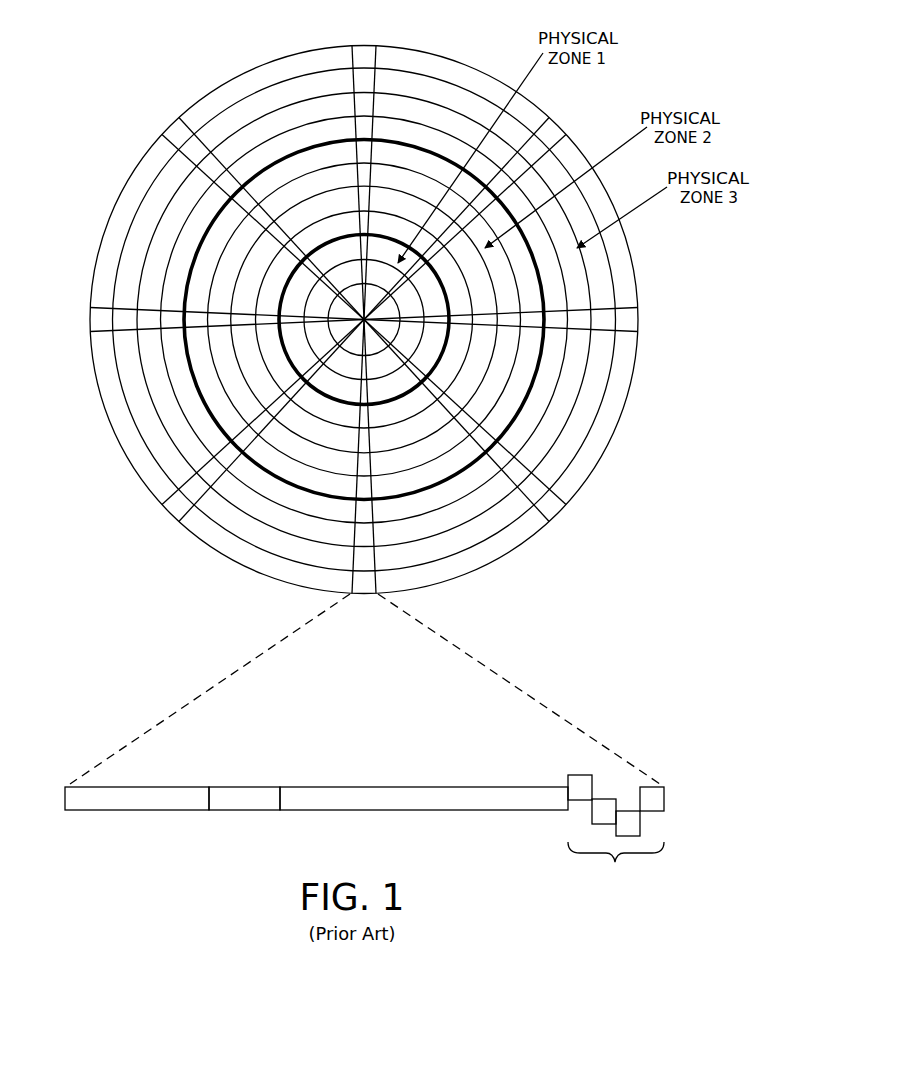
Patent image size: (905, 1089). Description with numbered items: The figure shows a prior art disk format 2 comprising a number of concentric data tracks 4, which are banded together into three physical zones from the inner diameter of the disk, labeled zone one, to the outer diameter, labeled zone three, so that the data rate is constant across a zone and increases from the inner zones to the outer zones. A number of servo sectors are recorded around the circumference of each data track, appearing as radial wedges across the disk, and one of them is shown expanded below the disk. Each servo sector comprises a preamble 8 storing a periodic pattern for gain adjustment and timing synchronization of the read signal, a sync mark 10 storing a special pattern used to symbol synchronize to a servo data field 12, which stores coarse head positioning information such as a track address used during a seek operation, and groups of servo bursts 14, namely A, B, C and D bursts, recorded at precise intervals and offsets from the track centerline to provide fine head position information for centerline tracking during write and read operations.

The disk format 2 is at (163, 50).
The data tracks 4 is at (457, 100).
The preamble 8 is at (120, 810).
The sync mark 10 is at (242, 810).
The servo data field 12 is at (413, 810).
The servo bursts 14 is at (558, 760).